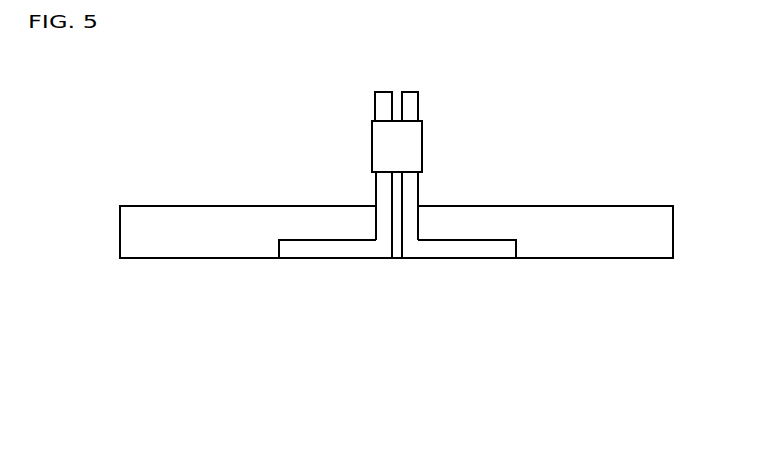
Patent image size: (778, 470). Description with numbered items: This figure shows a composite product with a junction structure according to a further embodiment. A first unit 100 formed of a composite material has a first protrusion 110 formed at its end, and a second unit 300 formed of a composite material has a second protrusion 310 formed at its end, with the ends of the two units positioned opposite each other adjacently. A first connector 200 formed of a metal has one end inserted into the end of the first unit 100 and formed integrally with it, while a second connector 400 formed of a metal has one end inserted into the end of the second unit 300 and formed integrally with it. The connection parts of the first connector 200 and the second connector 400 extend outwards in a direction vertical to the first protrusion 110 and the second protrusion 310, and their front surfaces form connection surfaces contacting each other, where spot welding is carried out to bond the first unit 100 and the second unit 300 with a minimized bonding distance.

The first unit 100 is at (159, 206).
The first protrusion 110 is at (315, 217).
The first connector 200 is at (330, 259).
The second unit 300 is at (634, 206).
The second protrusion 310 is at (478, 218).
The second connector 400 is at (453, 259).